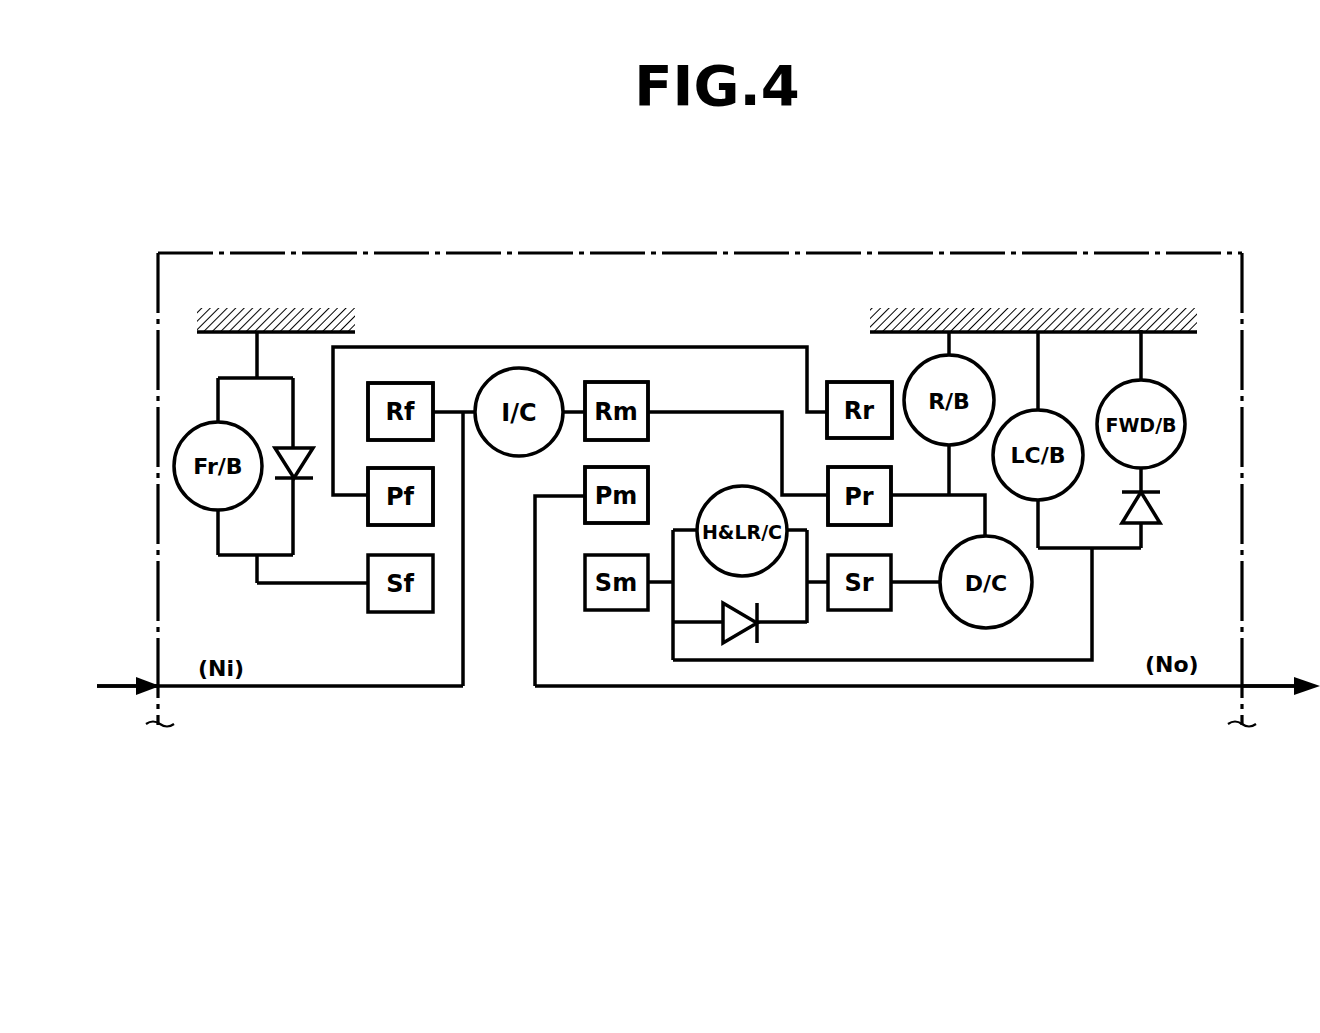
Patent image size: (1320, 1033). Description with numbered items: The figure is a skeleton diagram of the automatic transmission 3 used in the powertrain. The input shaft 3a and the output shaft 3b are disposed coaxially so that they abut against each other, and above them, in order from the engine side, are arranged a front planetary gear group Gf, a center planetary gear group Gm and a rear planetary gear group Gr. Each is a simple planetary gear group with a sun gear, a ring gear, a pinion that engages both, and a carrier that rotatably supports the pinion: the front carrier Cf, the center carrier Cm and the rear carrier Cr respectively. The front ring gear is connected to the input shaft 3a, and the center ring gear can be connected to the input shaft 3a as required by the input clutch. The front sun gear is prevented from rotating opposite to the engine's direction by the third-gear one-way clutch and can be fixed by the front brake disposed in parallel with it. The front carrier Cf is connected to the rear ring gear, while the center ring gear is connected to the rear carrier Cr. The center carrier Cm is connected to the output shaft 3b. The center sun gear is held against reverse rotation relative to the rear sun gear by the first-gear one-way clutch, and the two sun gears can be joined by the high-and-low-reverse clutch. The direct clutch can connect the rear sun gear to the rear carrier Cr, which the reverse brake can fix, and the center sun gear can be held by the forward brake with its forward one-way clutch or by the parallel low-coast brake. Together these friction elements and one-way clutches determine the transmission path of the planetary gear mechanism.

The automatic transmission 3 is at (732, 252).
The input shaft 3a is at (121, 690).
The output shaft 3b is at (1284, 690).
The front planetary gear group Gf is at (402, 383).
The center planetary gear group Gm is at (617, 382).
The rear planetary gear group Gr is at (853, 382).
The front carrier Cf is at (350, 495).
The center carrier Cm is at (557, 496).
The rear carrier Cr is at (804, 495).